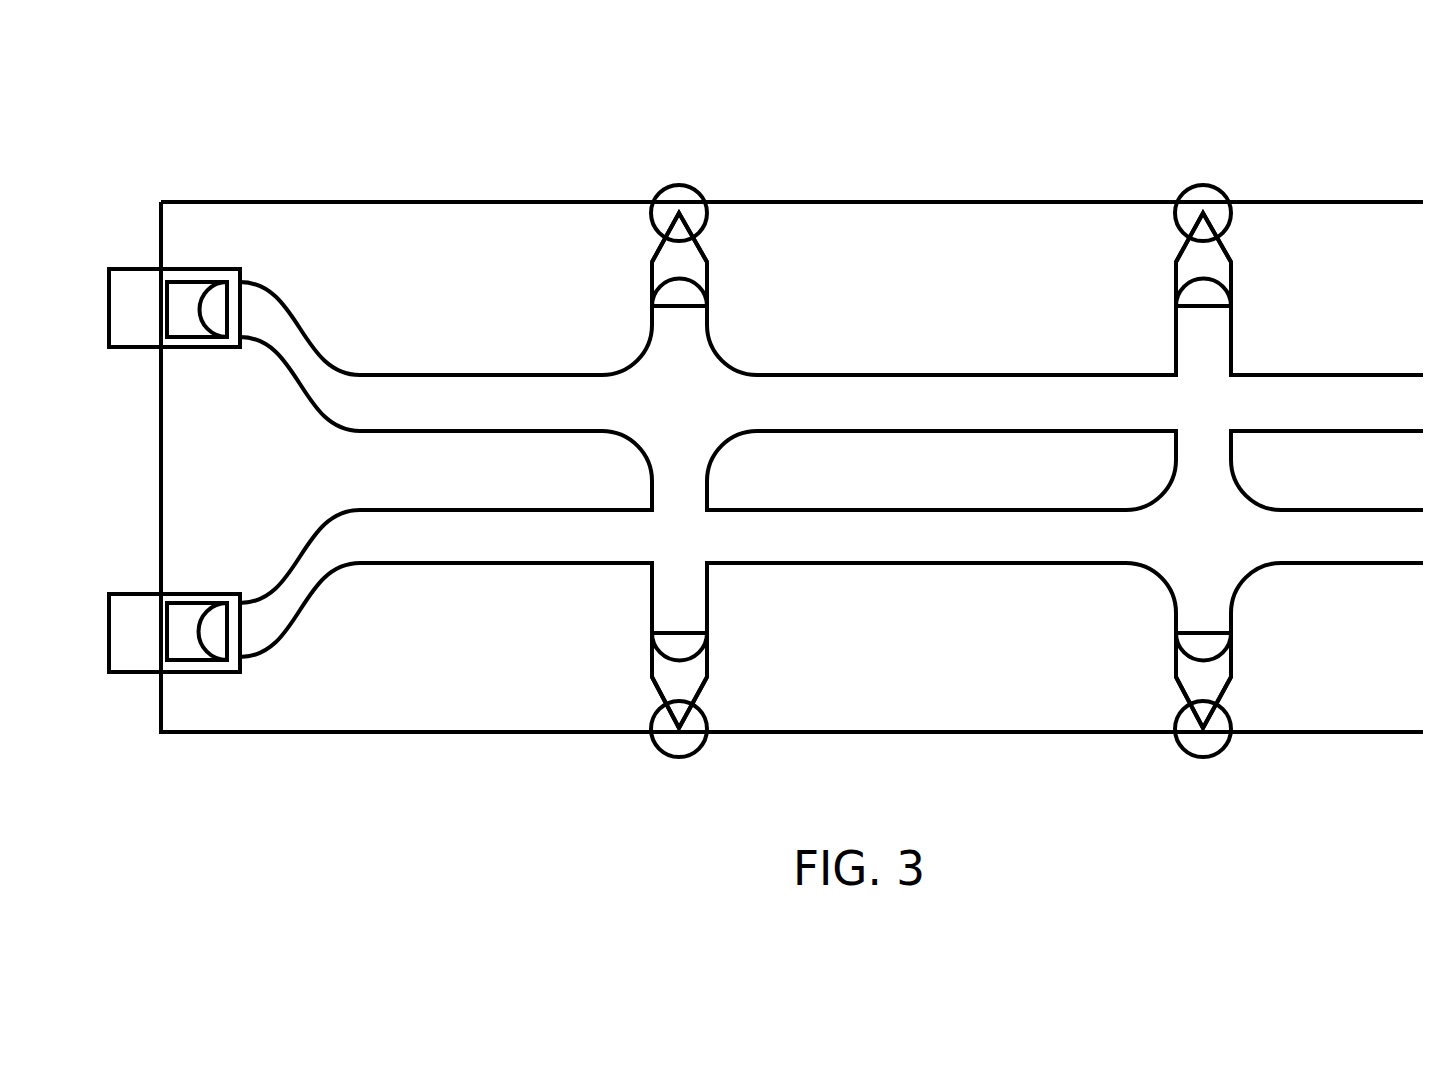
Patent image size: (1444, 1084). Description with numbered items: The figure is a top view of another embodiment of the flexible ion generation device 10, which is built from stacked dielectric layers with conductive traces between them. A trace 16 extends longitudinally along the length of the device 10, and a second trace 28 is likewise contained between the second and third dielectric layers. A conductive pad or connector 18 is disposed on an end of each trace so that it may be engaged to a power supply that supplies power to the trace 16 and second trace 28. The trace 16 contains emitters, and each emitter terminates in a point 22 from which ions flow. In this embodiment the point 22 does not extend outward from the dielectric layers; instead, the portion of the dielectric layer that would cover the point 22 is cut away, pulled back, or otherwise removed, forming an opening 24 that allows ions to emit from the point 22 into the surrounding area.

The flexible ion generation device 10 is at (814, 140).
The trace 16 is at (355, 372).
The connector 18 is at (128, 268).
The point 22 is at (1212, 212).
The opening 24 is at (1199, 185).
The second trace 28 is at (458, 550).